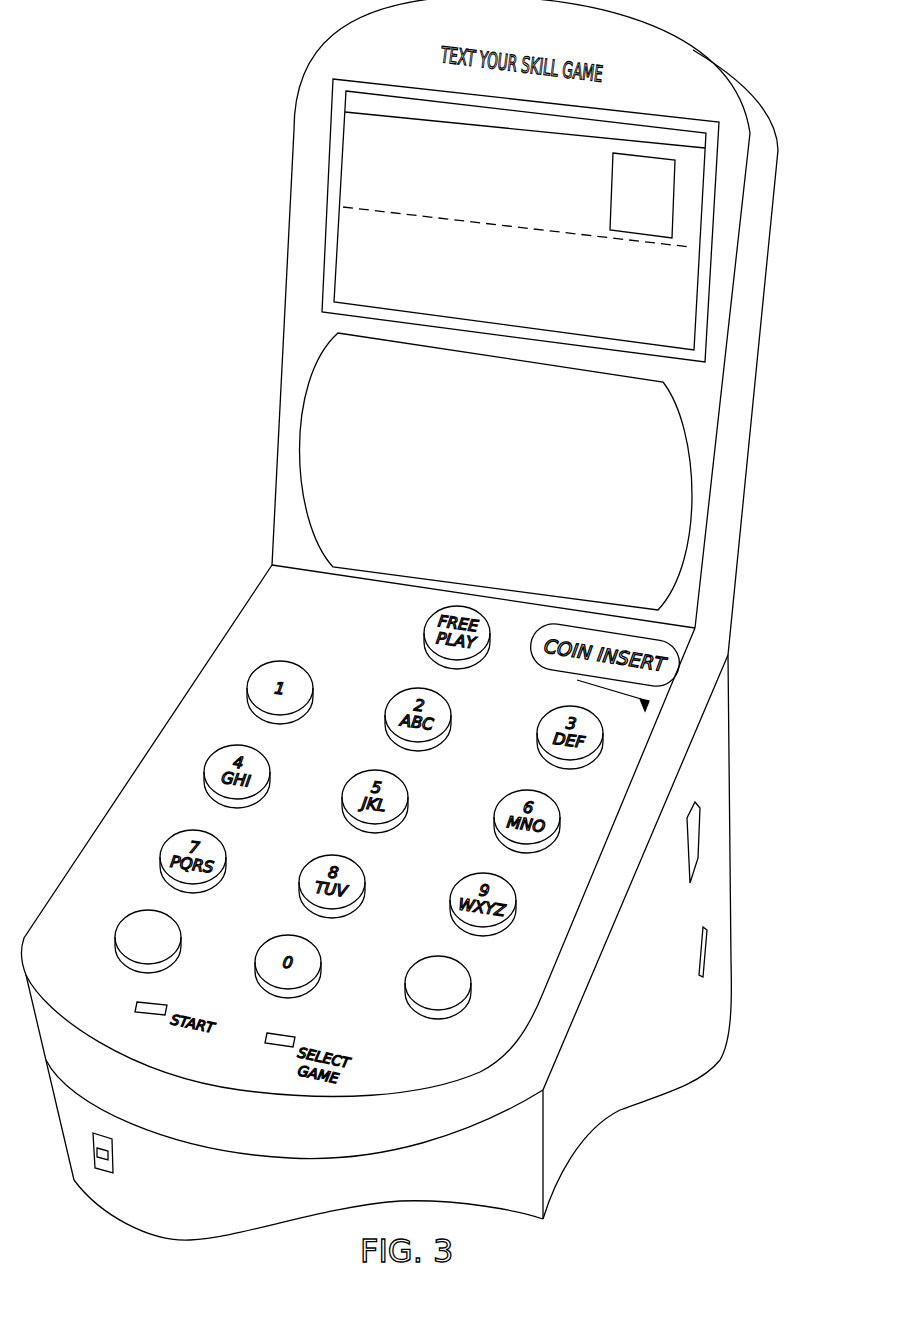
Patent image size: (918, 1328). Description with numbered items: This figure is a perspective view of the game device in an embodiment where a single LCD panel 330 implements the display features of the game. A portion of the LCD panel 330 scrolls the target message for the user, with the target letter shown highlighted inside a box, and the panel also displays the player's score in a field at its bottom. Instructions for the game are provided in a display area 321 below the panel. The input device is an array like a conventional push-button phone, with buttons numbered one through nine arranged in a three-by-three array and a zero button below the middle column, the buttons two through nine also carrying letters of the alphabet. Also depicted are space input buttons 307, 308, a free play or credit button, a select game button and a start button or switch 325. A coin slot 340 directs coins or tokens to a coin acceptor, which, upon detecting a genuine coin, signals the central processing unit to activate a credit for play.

The LCD panel 330 is at (333, 257).
The display area 321 is at (307, 387).
The left space button 307 is at (134, 912).
The right space button 308 is at (470, 977).
The coin slot 340 is at (697, 833).
The power switch 325 is at (113, 1148).